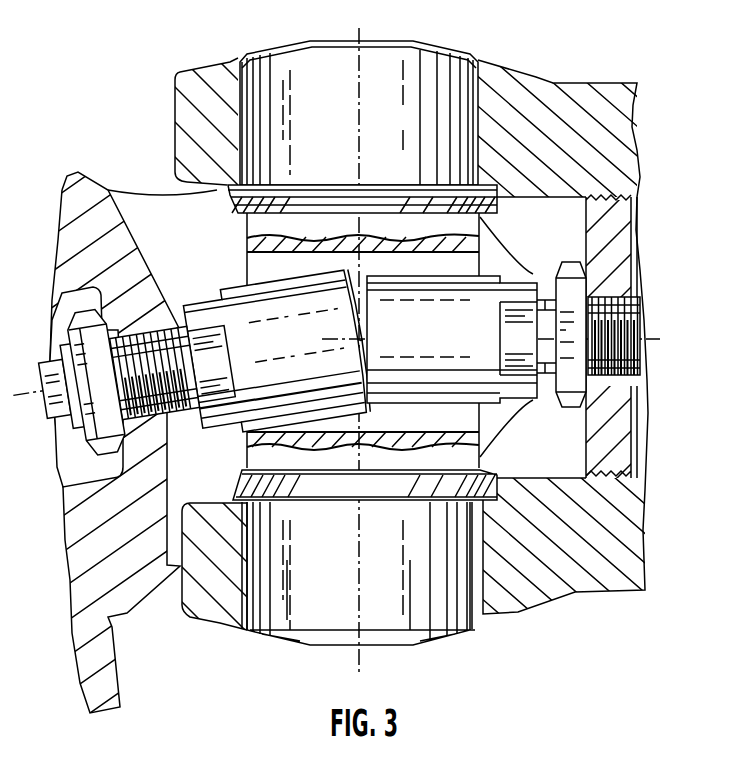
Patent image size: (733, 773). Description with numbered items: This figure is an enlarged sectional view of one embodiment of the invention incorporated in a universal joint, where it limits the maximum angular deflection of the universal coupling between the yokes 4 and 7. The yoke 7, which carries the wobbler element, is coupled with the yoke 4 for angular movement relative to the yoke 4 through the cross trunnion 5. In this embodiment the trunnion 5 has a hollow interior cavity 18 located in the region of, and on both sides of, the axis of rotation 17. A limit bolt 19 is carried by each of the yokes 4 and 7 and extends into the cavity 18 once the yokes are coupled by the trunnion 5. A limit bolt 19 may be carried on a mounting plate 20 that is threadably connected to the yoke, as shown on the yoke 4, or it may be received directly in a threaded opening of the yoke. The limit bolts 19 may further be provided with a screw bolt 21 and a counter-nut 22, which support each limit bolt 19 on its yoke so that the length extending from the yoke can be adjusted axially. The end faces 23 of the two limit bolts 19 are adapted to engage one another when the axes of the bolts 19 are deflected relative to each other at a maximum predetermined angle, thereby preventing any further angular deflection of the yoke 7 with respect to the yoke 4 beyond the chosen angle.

The yoke 4 is at (493, 95).
The cross trunnion 5 is at (292, 230).
The yoke 7 is at (90, 203).
The axis of rotation 17 is at (476, 337).
The hollow interior cavity 18 is at (388, 258).
The limit bolt 19 is at (287, 345).
The mounting plate 20 is at (609, 444).
The screw bolt 21 is at (165, 427).
The counter-nut 22 is at (103, 453).
The end face 23 is at (357, 280).